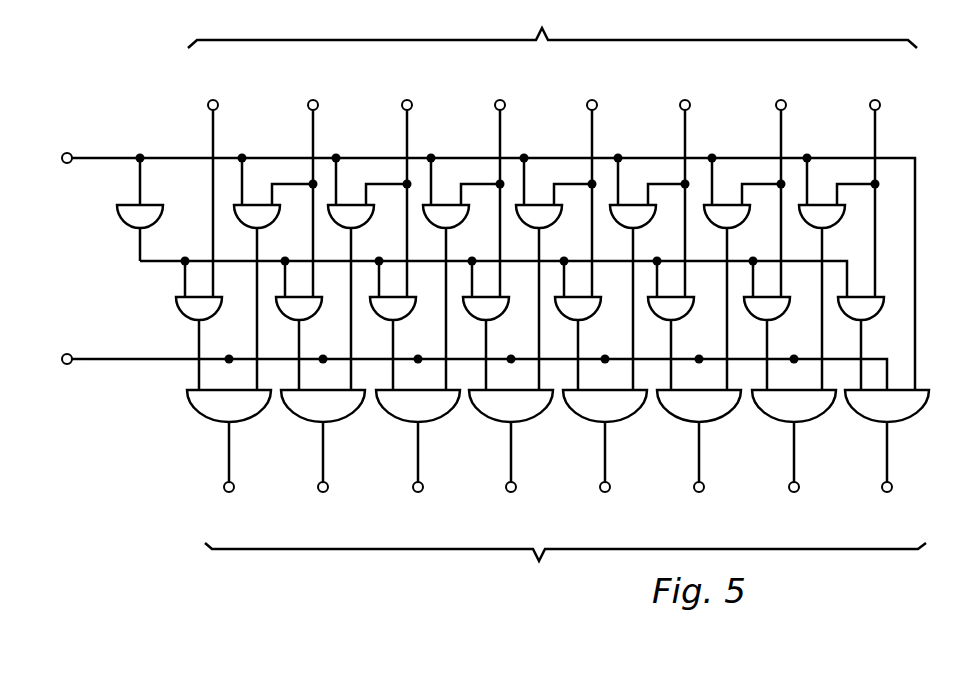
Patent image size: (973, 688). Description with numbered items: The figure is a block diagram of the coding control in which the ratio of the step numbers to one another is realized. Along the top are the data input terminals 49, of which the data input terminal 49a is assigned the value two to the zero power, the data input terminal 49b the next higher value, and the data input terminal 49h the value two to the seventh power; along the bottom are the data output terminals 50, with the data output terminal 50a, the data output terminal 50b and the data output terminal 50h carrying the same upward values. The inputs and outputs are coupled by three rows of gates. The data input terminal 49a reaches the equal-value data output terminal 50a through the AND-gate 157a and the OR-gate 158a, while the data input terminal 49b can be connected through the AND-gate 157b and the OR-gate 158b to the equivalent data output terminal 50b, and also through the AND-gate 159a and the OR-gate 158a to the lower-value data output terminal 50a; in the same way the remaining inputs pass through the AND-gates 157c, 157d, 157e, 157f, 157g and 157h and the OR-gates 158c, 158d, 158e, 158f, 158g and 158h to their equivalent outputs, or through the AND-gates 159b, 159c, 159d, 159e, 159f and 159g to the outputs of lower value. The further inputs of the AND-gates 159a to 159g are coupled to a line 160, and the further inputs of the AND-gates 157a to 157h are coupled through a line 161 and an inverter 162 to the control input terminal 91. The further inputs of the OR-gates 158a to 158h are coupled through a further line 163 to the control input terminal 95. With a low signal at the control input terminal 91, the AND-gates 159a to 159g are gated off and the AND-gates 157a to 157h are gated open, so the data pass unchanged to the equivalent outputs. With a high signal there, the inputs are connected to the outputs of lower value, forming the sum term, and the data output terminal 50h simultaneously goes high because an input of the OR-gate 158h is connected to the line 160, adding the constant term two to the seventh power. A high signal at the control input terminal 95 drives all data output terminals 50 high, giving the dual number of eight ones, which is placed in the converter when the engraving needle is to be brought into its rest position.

The data input terminal 49 is at (552, 24).
The data input terminal 49a is at (217, 111).
The data input terminal 49b is at (317, 111).
The data input terminal 49h is at (879, 111).
The data output terminal 50 is at (565, 567).
The data output terminal 50a is at (226, 487).
The data output terminal 50b is at (330, 487).
The data output terminal 50h is at (893, 487).
The control input terminal 91 is at (68, 153).
The control input terminal 95 is at (70, 365).
The AND-gate 157a is at (195, 308).
The AND-gate 157b is at (305, 305).
The AND-gate 157c is at (393, 325).
The AND-gate 157d is at (486, 325).
The AND-gate 157e is at (578, 325).
The AND-gate 157f is at (671, 325).
The AND-gate 157g is at (767, 325).
The AND-gate 157h is at (875, 302).
The OR-gate 158a is at (220, 412).
The OR-gate 158b is at (316, 410).
The OR-gate 158c is at (418, 436).
The OR-gate 158d is at (511, 436).
The OR-gate 158e is at (605, 436).
The OR-gate 158f is at (699, 436).
The OR-gate 158g is at (794, 436).
The OR-gate 158h is at (878, 403).
The AND-gate 159a is at (257, 213).
The AND-gate 159b is at (355, 213).
The AND-gate 159c is at (464, 274).
The AND-gate 159d is at (556, 274).
The AND-gate 159e is at (650, 274).
The AND-gate 159f is at (745, 274).
The AND-gate 159g is at (828, 213).
The line 160 is at (550, 157).
The line 161 is at (640, 261).
The inverter 162 is at (135, 221).
The further line 163 is at (681, 358).